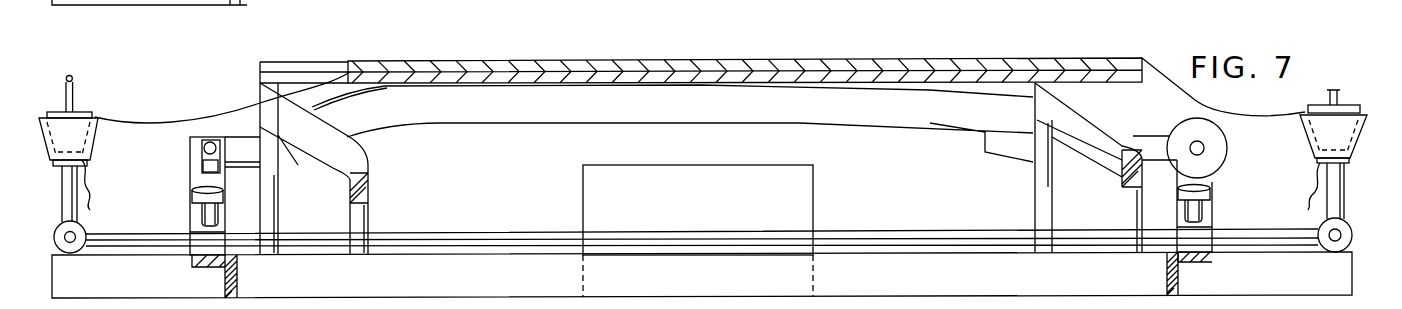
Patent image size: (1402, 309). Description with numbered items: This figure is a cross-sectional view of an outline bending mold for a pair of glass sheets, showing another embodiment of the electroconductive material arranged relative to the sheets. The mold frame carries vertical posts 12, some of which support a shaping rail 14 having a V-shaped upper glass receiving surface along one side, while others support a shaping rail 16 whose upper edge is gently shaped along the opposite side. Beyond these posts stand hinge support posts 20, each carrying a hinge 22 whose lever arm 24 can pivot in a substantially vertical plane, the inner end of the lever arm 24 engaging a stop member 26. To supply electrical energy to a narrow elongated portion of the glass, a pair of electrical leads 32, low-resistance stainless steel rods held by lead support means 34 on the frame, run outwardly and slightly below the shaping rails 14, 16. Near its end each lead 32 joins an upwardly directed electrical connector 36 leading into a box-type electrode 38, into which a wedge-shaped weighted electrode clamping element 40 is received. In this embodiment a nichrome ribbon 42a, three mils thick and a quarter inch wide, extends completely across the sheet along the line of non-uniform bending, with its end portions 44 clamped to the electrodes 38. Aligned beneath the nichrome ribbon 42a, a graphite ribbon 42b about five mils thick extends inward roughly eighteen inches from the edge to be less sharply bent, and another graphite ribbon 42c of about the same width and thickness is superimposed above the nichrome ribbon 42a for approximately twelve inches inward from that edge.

The vertical posts 12 is at (270, 218).
The shaping rail 14 is at (350, 186).
The shaping rail 16 is at (1122, 178).
The hinge support posts 20 is at (190, 214).
The hinge 22 is at (190, 146).
The lever arm 24 is at (1205, 150).
The stop member 26 is at (190, 190).
The electrical leads 32 is at (547, 234).
The lead support means 34 is at (58, 222).
The electrical connector 36 is at (1325, 208).
The box-type electrode 38 is at (62, 168).
The wedge-shaped weighted electrode clamping element 40 is at (58, 108).
The nichrome ribbon 42a is at (558, 68).
The graphite ribbon 42b is at (747, 85).
The graphite ribbon 42c is at (862, 68).
The end portions 44 is at (212, 118).